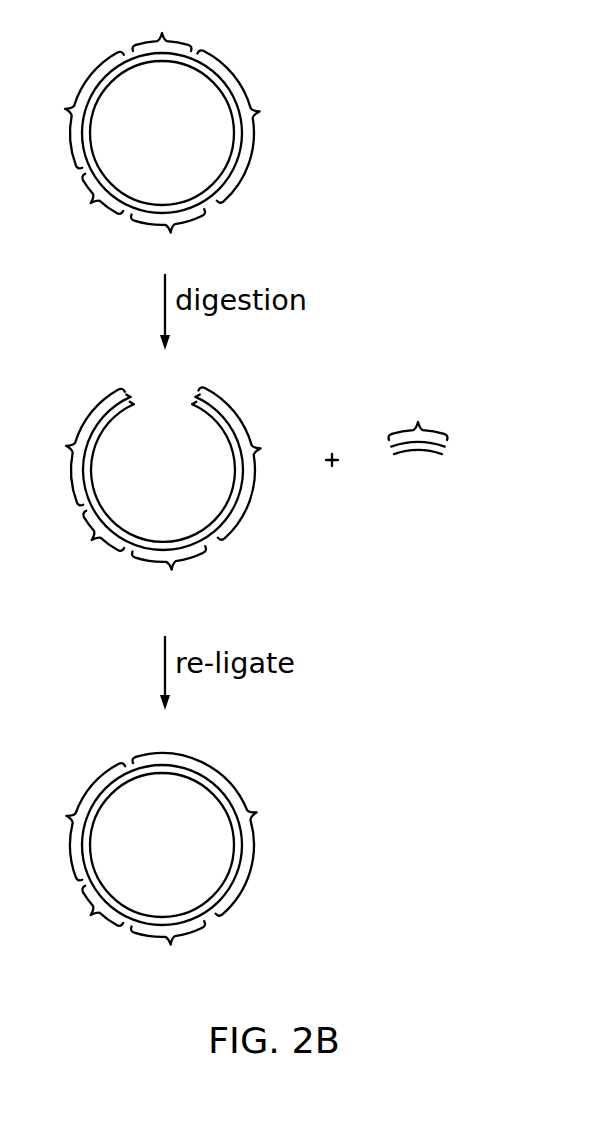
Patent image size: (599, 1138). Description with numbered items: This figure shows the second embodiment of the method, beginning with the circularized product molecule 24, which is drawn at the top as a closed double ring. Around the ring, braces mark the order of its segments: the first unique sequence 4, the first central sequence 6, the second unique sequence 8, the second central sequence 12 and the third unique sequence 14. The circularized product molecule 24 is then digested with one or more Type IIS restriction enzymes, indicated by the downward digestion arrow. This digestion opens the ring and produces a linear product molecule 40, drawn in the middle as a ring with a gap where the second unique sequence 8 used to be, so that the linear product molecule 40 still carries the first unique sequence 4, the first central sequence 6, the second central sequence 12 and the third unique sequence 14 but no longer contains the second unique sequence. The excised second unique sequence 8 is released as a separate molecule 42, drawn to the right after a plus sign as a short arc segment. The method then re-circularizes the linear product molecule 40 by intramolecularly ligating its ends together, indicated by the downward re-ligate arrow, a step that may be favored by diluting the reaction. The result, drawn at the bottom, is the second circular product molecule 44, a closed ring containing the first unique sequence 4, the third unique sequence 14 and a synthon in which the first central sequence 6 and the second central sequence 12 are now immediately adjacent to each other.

The first unique sequence 4 is at (97, 553).
The first central sequence 6 is at (87, 466).
The second unique sequence 8 is at (290, 225).
The second central sequence 12 is at (214, 482).
The third unique sequence 14 is at (168, 590).
The circularized product molecule 24 is at (253, 52).
The linear product molecule 40 is at (247, 372).
The separate molecule 42 is at (460, 405).
The second circular product molecule 44 is at (251, 764).